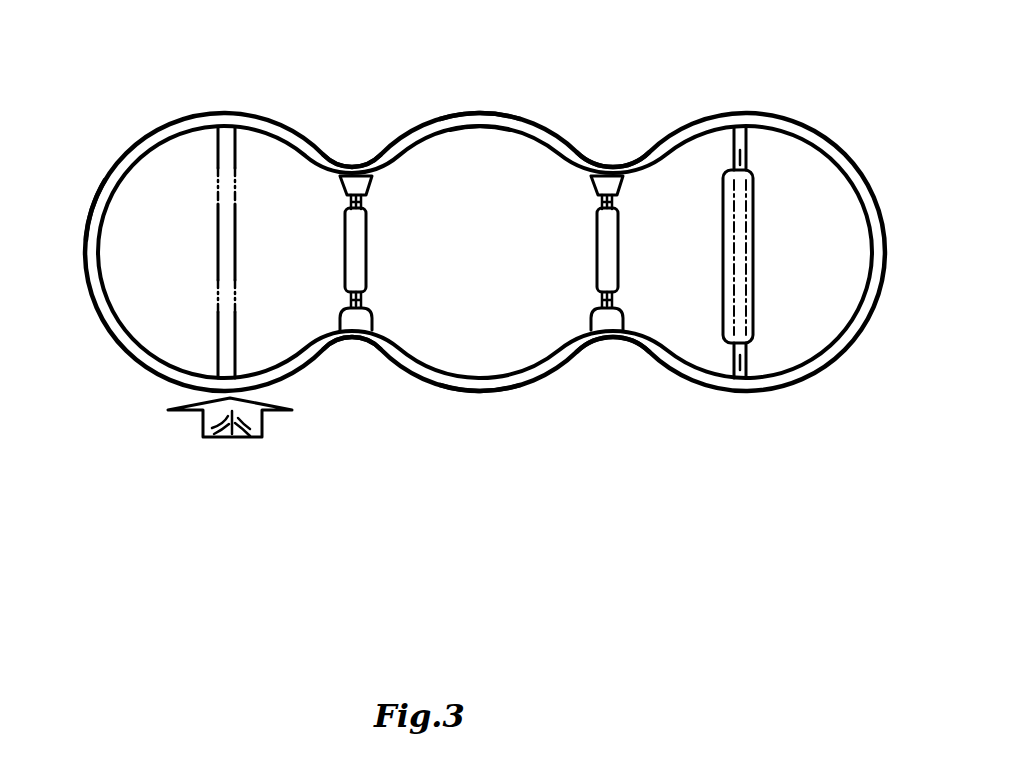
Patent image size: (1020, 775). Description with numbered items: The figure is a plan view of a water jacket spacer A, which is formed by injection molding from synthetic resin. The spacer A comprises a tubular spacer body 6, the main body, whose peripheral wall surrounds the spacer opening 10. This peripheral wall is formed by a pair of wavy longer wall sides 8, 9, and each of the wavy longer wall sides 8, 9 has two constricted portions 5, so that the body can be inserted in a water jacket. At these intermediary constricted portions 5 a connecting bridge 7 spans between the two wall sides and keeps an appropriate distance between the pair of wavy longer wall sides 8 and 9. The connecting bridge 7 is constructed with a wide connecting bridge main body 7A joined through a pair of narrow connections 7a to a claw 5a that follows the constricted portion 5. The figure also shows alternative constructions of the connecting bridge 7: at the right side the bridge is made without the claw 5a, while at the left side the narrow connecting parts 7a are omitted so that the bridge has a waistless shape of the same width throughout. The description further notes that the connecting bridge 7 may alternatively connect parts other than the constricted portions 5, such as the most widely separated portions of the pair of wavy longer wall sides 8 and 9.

The constricted portion 5 is at (356, 165).
The claw 5a is at (355, 190).
The tubular spacer body 6 is at (118, 172).
The connecting bridge 7 is at (208, 255).
The narrow connection 7a is at (364, 204).
The connecting bridge main body 7A is at (358, 262).
The wavy longer wall side 8 is at (491, 396).
The wavy longer wall side 9 is at (477, 114).
The spacer opening 10 is at (496, 144).
The water jacket spacer A is at (762, 116).